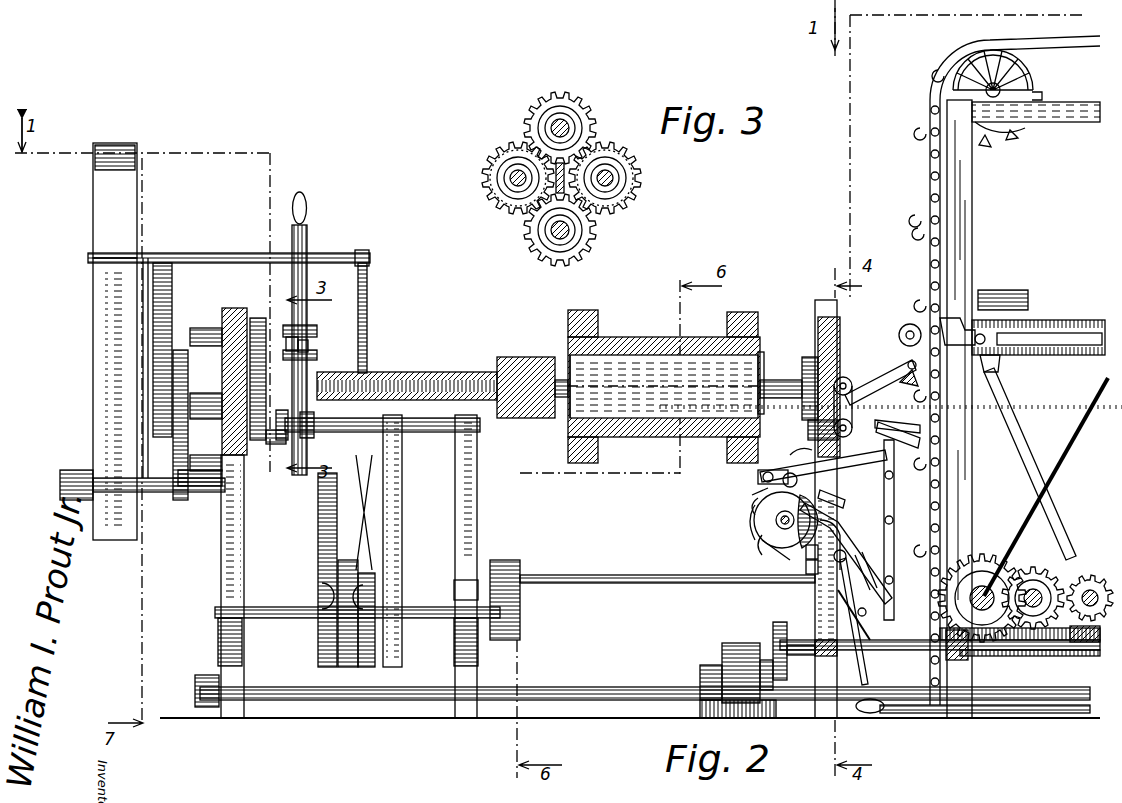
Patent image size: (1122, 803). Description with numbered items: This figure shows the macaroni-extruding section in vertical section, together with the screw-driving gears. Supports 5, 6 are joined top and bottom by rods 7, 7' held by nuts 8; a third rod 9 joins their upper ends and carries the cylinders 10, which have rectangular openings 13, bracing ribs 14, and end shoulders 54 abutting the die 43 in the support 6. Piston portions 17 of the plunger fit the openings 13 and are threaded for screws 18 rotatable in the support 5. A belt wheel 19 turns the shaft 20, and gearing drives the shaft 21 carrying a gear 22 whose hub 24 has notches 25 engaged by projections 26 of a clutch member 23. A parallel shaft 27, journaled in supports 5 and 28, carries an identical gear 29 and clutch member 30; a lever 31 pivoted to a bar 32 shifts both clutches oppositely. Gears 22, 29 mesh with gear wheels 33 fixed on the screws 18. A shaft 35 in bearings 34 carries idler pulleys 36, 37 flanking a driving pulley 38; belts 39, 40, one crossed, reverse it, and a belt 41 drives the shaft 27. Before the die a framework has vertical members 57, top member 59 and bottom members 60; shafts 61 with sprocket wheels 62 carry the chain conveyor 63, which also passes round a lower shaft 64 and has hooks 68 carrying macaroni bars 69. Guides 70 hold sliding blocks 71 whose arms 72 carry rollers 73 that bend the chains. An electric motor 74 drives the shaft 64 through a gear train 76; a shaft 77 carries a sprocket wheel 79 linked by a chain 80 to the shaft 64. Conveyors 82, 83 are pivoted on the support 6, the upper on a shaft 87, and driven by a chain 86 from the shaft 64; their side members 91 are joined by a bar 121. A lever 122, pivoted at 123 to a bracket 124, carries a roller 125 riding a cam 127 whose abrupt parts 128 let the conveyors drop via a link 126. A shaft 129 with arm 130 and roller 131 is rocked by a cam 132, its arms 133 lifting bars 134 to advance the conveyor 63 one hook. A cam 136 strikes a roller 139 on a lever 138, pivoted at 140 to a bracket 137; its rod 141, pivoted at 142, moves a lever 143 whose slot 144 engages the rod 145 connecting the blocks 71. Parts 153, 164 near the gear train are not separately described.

In FIG. 2, the support 5 is at (240, 546).
In FIG. 2, the support 6 is at (815, 600).
In FIG. 2, the rod 7 is at (89, 200).
In FIG. 2, the rod 7' is at (645, 683).
In FIG. 2, the nuts 8 is at (198, 690).
In FIG. 2, the rod 9 is at (776, 390).
In FIG. 2, the cylinders 10 is at (652, 340).
In FIG. 2, the rectangular openings 13 is at (572, 400).
In FIG. 2, the transverse bracing ribs 14 is at (596, 312).
In FIG. 2, the piston portions 17 is at (474, 374).
In FIG. 2, the screws 18 is at (428, 376).
In FIG. 3, the screws 18 is at (490, 178).
In FIG. 2, the frame upright 19 is at (99, 302).
In FIG. 2, the shaft 20 is at (150, 494).
In FIG. 2, the shaft 21 is at (186, 340).
In FIG. 3, the shaft 21 is at (572, 128).
In FIG. 2, the gear 22 is at (262, 332).
In FIG. 3, the gear 22 is at (576, 108).
In FIG. 2, the clutch member 23 is at (305, 352).
In FIG. 2, the hub 24 is at (283, 326).
In FIG. 3, the hub 24 is at (570, 136).
In FIG. 2, the notches 25 is at (294, 340).
In FIG. 3, the notches 25 is at (566, 122).
In FIG. 2, the projections 26 is at (302, 348).
In FIG. 2, the shaft 27 is at (348, 432).
In FIG. 3, the shaft 27 is at (548, 232).
In FIG. 2, the support 28 is at (458, 518).
In FIG. 2, the gear 29 is at (224, 443).
In FIG. 3, the gear 29 is at (556, 262).
In FIG. 2, the clutch member 30 is at (300, 420).
In FIG. 2, the lever 31 is at (307, 256).
In FIG. 2, the bar 32 is at (274, 446).
In FIG. 3, the gear wheels 33 is at (500, 206).
In FIG. 2, the bearings 34 is at (238, 638).
In FIG. 2, the shaft 35 is at (283, 610).
In FIG. 2, the idler pulley 36 is at (325, 594).
In FIG. 2, the idler pulley 37 is at (372, 598).
In FIG. 2, the driving pulley 38 is at (346, 560).
In FIG. 2, the belt 39 is at (320, 541).
In FIG. 2, the belt 40 is at (364, 500).
In FIG. 2, the belt 41 is at (403, 494).
In FIG. 2, the die 43 is at (810, 356).
In FIG. 2, the shoulders 54 is at (764, 364).
In FIG. 2, the vertical members 57 is at (966, 278).
In FIG. 2, the horizontal top member 59 is at (1082, 122).
In FIG. 2, the horizontal members 60 is at (1030, 662).
In FIG. 2, the shafts 61 is at (1002, 90).
In FIG. 2, the sprocket wheels 62 is at (1036, 68).
In FIG. 2, the chain conveyor 63 is at (936, 63).
In FIG. 2, the shaft 64 is at (982, 598).
In FIG. 2, the hooks 68 is at (922, 234).
In FIG. 2, the bars 69 is at (926, 132).
In FIG. 2, the guides 70 is at (1058, 322).
In FIG. 2, the blocks 71 is at (1016, 332).
In FIG. 2, the arms 72 is at (948, 338).
In FIG. 2, the rollers 73 is at (906, 325).
In FIG. 2, the electric motor 74 is at (728, 645).
In FIG. 2, the train of gears 76 is at (1098, 574).
In FIG. 2, the shaft 77 is at (755, 514).
In FIG. 2, the sprocket wheel 79 is at (806, 572).
In FIG. 2, the link 80 is at (864, 549).
In FIG. 2, the conveyor 82 is at (881, 360).
In FIG. 2, the conveyor 83 is at (911, 375).
In FIG. 2, the chain 86 is at (905, 462).
In FIG. 2, the shaft 87 is at (845, 376).
In FIG. 2, the side members 91 is at (862, 378).
In FIG. 2, the bar 121 is at (815, 428).
In FIG. 2, the lever 122 is at (812, 476).
In FIG. 2, the pivot 123 is at (782, 482).
In FIG. 2, the bracket 124 is at (758, 474).
In FIG. 2, the roller 125 is at (788, 454).
In FIG. 2, the link 126 is at (922, 432).
In FIG. 2, the cam 127 is at (752, 530).
In FIG. 2, the abrupt parts 128 is at (758, 498).
In FIG. 2, the shaft 129 is at (858, 556).
In FIG. 2, the arm 130 is at (808, 562).
In FIG. 2, the roller 131 is at (776, 522).
In FIG. 2, the cam 132 is at (762, 548).
In FIG. 2, the arms 133 is at (860, 570).
In FIG. 2, the bars 134 is at (896, 512).
In FIG. 2, the cam 136 is at (750, 495).
In FIG. 2, the stationary bracket 137 is at (840, 616).
In FIG. 2, the lever 138 is at (868, 670).
In FIG. 2, the roller 139 is at (857, 523).
In FIG. 2, the pivot 140 is at (866, 622).
In FIG. 2, the rod 141 is at (1020, 706).
In FIG. 2, the pivot 142 is at (870, 714).
In FIG. 2, the lever 143 is at (1052, 514).
In FIG. 2, the slot 144 is at (1002, 366).
In FIG. 2, the rod 145 is at (1026, 302).
In FIG. 2, the block 153 is at (946, 656).
In FIG. 2, the rod 164 is at (1012, 562).